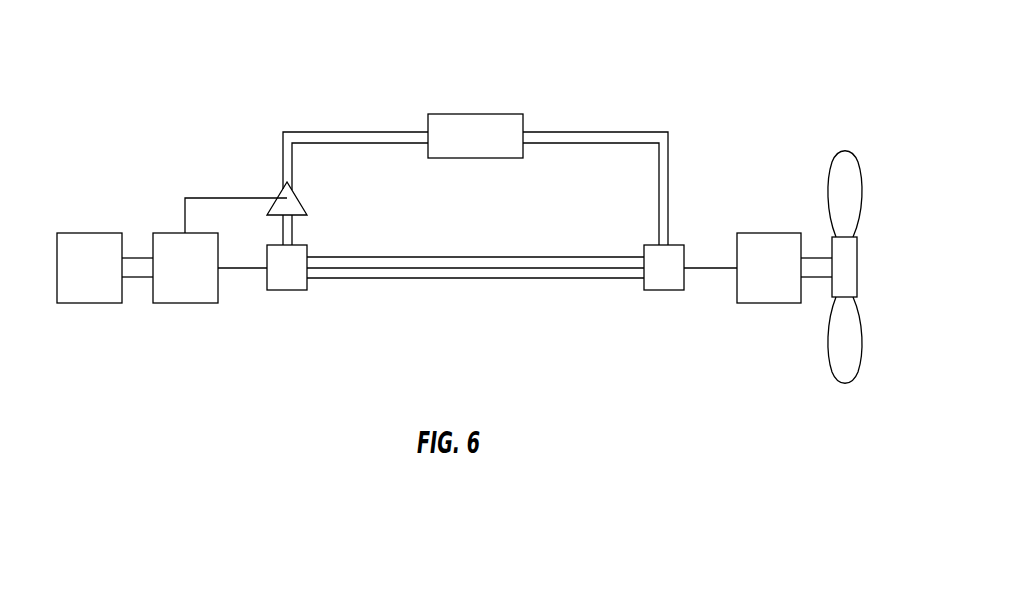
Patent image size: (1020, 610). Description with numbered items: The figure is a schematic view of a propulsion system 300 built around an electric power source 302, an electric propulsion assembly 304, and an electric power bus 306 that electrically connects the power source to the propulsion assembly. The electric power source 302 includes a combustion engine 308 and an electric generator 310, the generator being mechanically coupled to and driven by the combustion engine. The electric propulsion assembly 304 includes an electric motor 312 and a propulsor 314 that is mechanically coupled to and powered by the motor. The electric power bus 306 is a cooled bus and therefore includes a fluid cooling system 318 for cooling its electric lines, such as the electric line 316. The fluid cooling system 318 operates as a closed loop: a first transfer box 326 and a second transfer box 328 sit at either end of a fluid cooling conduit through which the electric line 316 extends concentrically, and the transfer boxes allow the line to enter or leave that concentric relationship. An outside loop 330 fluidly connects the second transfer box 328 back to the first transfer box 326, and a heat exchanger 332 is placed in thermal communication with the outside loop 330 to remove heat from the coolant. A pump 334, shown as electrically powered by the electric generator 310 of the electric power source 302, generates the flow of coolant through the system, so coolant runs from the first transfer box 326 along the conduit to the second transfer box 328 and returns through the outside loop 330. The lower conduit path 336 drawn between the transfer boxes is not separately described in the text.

The propulsion system 300 is at (615, 96).
The electric power source 302 is at (157, 196).
The electric propulsion assembly 304 is at (786, 166).
The electric power bus 306 is at (703, 157).
The combustion engine 308 is at (103, 280).
The electric generator 310 is at (198, 280).
The electric motor 312 is at (783, 280).
The propulsor 314 is at (829, 335).
The electric line 316 is at (470, 268).
The fluid cooling system 318 is at (271, 120).
The first transfer box 326 is at (287, 290).
The second transfer box 328 is at (664, 290).
The outside loop 330 is at (365, 126).
The heat exchanger 332 is at (470, 128).
The pump 334 is at (303, 198).
The supply conduit 336 is at (383, 278).